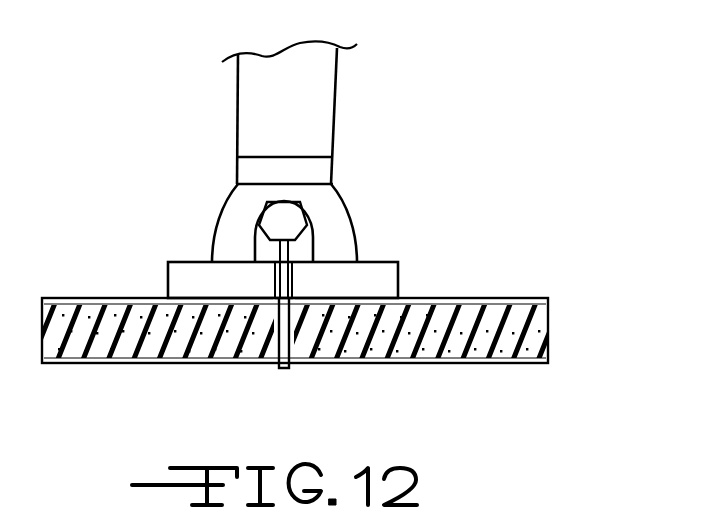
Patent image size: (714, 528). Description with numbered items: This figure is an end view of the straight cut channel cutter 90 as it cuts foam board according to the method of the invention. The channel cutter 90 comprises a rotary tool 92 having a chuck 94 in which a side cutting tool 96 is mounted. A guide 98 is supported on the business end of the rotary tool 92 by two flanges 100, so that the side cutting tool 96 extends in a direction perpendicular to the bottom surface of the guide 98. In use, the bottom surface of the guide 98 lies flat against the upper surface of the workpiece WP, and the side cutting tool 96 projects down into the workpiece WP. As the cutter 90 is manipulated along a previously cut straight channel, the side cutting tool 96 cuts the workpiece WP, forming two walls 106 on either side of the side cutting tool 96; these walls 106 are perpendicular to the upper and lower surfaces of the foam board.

The straight cut channel cutter 90 is at (362, 129).
The rotary tool 92 is at (337, 87).
The chuck 94 is at (287, 225).
The side cutting tool 96 is at (289, 356).
The guide 98 is at (177, 261).
The flanges 100 is at (345, 203).
The walls 106 is at (280, 313).
The workpiece WP is at (518, 363).